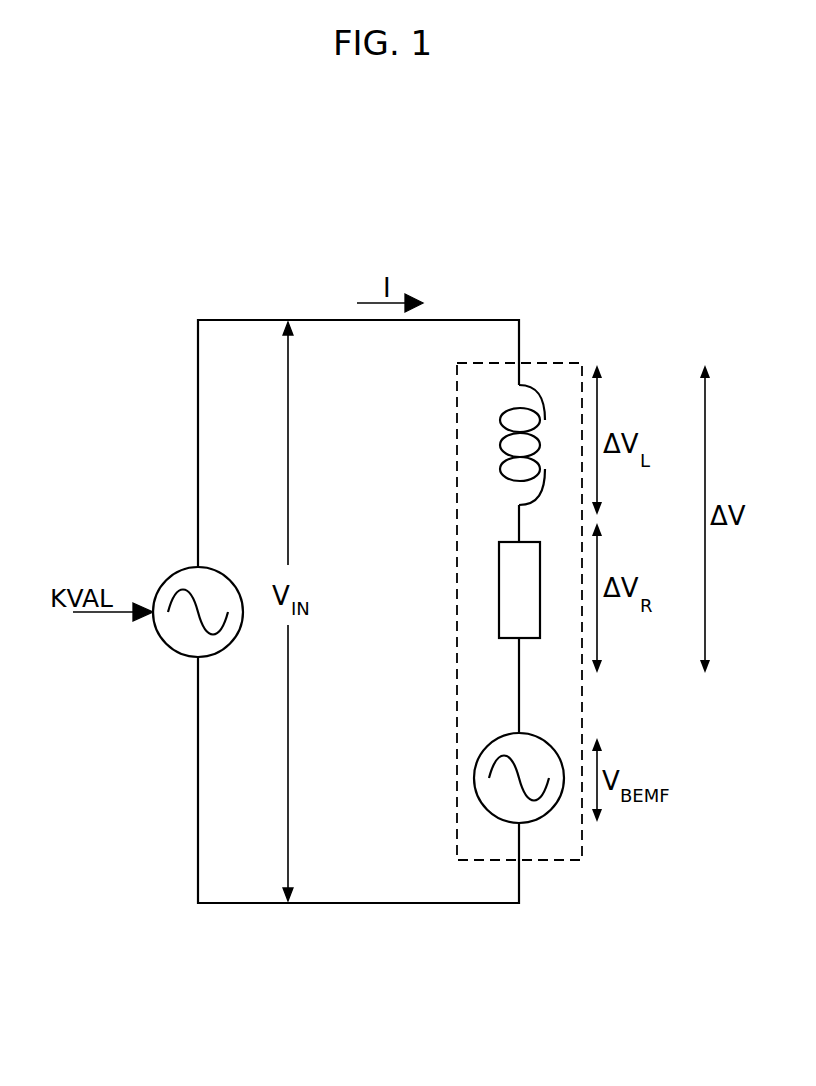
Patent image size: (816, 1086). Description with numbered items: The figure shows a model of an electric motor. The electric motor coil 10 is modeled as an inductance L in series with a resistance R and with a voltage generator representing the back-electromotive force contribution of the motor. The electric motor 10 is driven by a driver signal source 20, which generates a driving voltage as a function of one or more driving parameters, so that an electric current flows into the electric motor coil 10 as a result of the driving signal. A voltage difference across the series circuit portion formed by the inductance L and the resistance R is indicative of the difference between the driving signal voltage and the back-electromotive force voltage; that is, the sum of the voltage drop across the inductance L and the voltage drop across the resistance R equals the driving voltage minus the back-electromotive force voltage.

The electric motor coil 10 is at (546, 566).
The driver signal source 20 is at (174, 642).
The inductance L is at (500, 466).
The resistance R is at (499, 610).